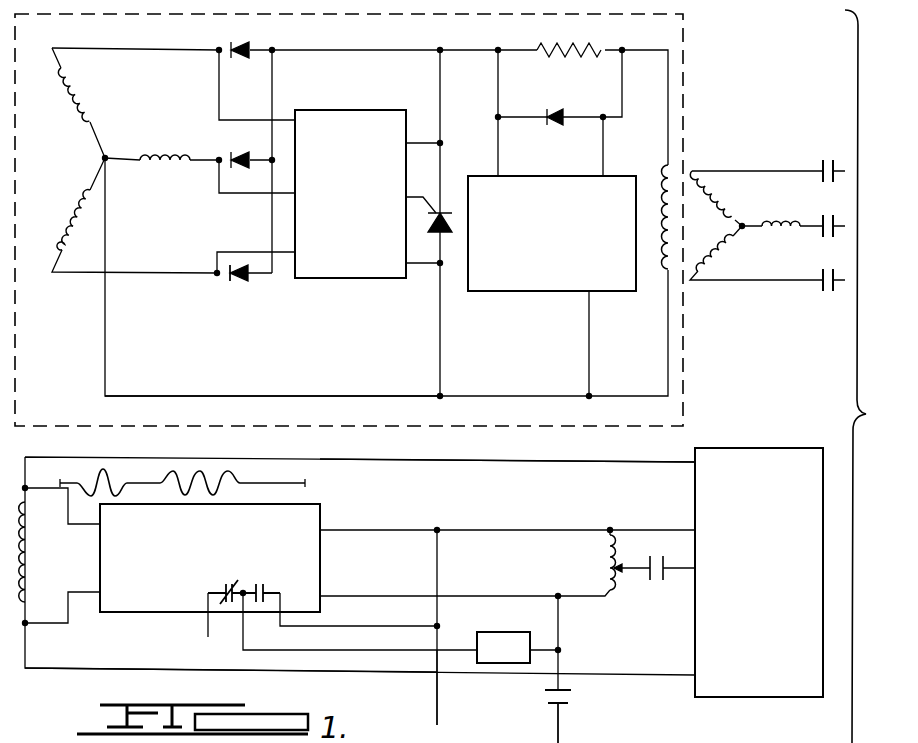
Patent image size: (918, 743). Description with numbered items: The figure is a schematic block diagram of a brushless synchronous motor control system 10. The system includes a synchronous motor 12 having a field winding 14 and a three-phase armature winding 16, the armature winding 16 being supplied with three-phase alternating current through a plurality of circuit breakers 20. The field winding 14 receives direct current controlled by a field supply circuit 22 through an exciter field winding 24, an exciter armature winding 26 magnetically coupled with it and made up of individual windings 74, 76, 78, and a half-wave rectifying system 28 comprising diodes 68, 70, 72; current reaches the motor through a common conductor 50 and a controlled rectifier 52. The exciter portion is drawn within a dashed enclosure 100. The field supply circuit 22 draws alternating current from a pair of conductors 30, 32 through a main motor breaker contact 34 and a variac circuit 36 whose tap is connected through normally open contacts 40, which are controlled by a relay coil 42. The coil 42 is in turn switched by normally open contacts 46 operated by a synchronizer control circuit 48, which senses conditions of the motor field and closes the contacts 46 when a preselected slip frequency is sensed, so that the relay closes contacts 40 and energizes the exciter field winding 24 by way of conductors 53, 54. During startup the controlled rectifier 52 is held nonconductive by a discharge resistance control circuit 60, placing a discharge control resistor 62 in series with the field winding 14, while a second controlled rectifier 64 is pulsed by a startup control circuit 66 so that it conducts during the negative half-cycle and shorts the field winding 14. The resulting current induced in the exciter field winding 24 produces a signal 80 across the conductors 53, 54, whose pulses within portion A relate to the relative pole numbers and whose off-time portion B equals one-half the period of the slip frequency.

The brushless synchronous motor control system 10 is at (403, 457).
The synchronous motor 12 is at (766, 203).
The field winding 14 is at (660, 270).
The three-phase armature winding 16 is at (750, 200).
The circuit breakers 20 is at (826, 302).
The field supply circuit 22 is at (731, 676).
The exciter field winding 24 is at (35, 556).
The exciter armature winding 26 is at (123, 181).
The half-wave rectifying system 28 is at (236, 292).
The conductor 30 is at (442, 703).
The conductor 32 is at (561, 735).
The main motor breaker contact 34 is at (576, 698).
The variac circuit 36 is at (600, 562).
The normally open contacts 40 is at (658, 582).
The relay coil 42 is at (496, 632).
The normally open contacts 46 is at (285, 573).
The synchronizer control circuit 48 is at (325, 509).
The common conductor 50 is at (259, 394).
The controlled rectifier 52 is at (549, 119).
The conductor 53 is at (537, 462).
The conductor 54 is at (139, 668).
The discharge resistance control circuit 60 is at (498, 292).
The discharge control resistor 62 is at (576, 56).
The second controlled rectifier 64 is at (445, 208).
The startup control circuit 66 is at (356, 279).
The diode 68 is at (252, 44).
The diode 70 is at (240, 150).
The diode 72 is at (238, 263).
The individual winding 74 is at (85, 96).
The individual winding 76 is at (160, 153).
The individual winding 78 is at (85, 214).
The signal 80 is at (147, 480).
The rotor circuit enclosure 100 is at (360, 50).
The portion A is at (103, 475).
The portion B is at (161, 483).